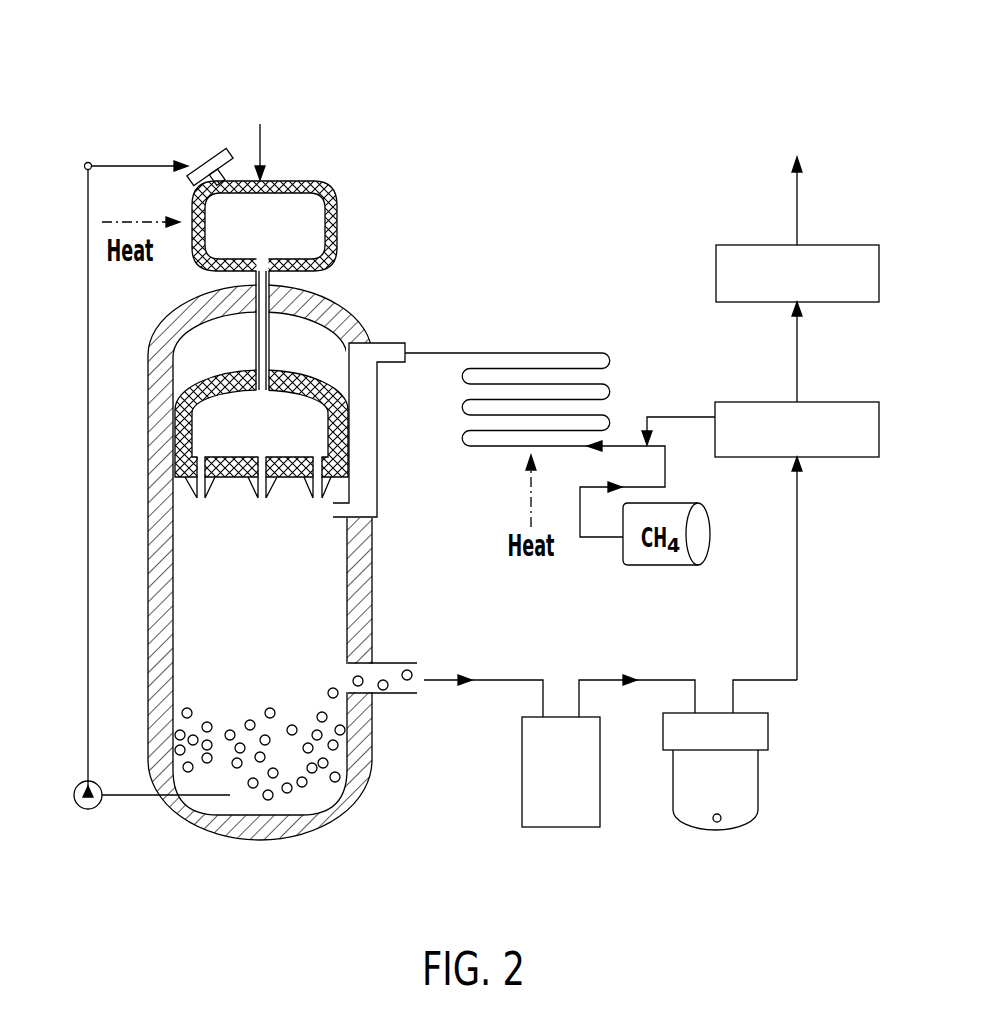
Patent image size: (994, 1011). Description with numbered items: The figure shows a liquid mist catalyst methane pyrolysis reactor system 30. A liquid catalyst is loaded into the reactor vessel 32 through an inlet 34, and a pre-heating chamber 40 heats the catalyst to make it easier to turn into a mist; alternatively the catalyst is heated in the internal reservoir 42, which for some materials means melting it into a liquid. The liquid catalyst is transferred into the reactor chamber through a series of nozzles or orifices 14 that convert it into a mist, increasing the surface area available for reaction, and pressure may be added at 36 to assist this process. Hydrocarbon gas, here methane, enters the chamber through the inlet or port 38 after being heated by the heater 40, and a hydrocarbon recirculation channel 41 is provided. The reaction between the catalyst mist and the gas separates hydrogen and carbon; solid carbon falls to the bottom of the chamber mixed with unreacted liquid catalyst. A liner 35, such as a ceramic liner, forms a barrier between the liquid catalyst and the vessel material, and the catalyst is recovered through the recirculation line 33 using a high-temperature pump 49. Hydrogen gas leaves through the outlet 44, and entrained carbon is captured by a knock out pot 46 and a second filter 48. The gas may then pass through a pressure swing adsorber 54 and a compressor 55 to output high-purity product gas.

The system 30 is at (622, 88).
The reactor vessel 32 is at (371, 795).
The recirculation line 33 is at (88, 535).
The inlet 34 is at (208, 158).
The liner 35 is at (350, 755).
The pressure 36 is at (262, 142).
The inlet or port 38 is at (385, 345).
The pre-heating chamber / heater 40 is at (248, 242).
The hydrocarbon recirculation channel 41 is at (675, 416).
The internal reservoir 42 is at (248, 441).
The nozzles or orifices 14 is at (258, 498).
The outlet 44 is at (418, 672).
The knock out pot 46 is at (551, 792).
The second filter 48 is at (707, 795).
The high-temperature pump 49 is at (74, 795).
The pressure swing adsorber (PSA) 54 is at (879, 430).
The compressor 55 is at (879, 270).